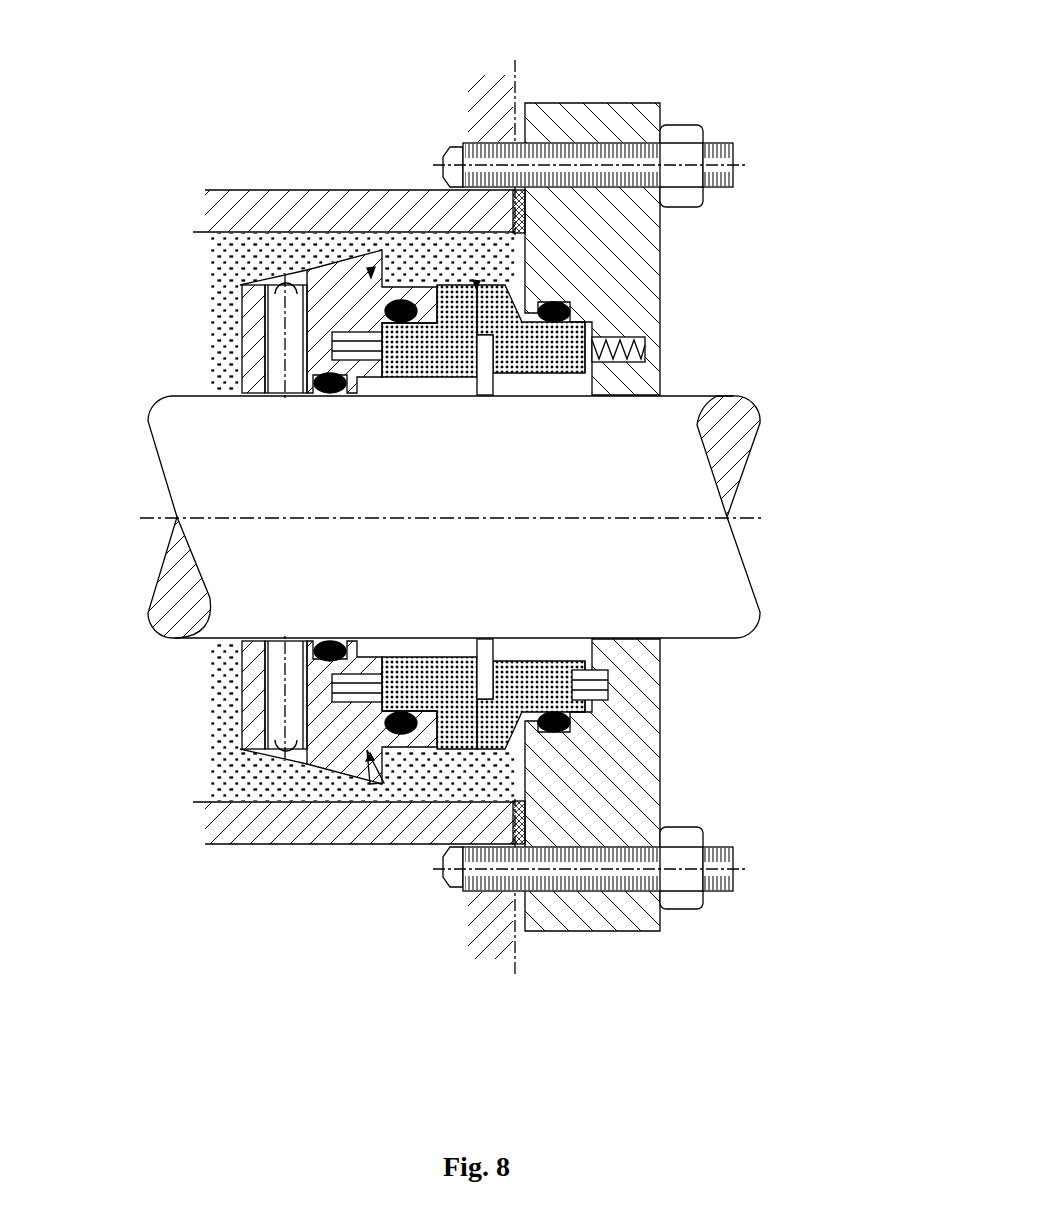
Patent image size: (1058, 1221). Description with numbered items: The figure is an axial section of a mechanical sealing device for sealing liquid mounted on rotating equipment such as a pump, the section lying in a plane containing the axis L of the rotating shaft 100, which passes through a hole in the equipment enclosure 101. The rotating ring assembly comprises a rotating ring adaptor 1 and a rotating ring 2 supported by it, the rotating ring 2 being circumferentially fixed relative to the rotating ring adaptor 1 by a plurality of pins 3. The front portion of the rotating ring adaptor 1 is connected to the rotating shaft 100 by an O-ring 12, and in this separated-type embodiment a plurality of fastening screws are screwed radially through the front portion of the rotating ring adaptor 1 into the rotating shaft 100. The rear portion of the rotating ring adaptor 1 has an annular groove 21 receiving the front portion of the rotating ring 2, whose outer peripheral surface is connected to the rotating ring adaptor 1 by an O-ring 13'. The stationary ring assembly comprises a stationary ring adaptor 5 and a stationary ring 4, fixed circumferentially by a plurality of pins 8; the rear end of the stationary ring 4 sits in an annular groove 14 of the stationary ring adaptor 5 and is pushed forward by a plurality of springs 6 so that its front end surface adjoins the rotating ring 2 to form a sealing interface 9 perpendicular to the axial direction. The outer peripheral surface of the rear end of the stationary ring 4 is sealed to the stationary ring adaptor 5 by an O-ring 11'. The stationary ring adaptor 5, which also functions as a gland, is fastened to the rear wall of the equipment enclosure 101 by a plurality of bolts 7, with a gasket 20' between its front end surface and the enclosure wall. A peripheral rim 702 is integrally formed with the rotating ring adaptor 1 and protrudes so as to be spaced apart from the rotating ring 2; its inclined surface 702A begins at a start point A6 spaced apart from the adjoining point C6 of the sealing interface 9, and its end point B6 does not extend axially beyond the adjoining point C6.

The rotating ring adaptor 1 is at (243, 355).
The rotating ring 2 is at (398, 357).
The pins 3 is at (345, 690).
The stationary ring 4 is at (550, 343).
The stationary ring adaptor 5 is at (653, 282).
The springs 6 is at (648, 355).
The bolts 7 is at (730, 177).
The pins 8 is at (605, 688).
The sealing interface 9 is at (480, 705).
The O-ring 11' is at (696, 578).
The O-ring 12 is at (312, 658).
The O-ring 13' is at (399, 639).
The annular groove 14 is at (590, 381).
The gasket 20' is at (584, 654).
The annular groove 21 is at (370, 783).
The rotating shaft 100 is at (727, 495).
The equipment enclosure 101 is at (277, 180).
The peripheral rim 702 is at (369, 252).
The inclined surface 702A is at (368, 755).
The start point A6 is at (370, 753).
The end point B6 is at (371, 278).
The adjoining point C6 is at (476, 288).
The axis L is at (467, 520).